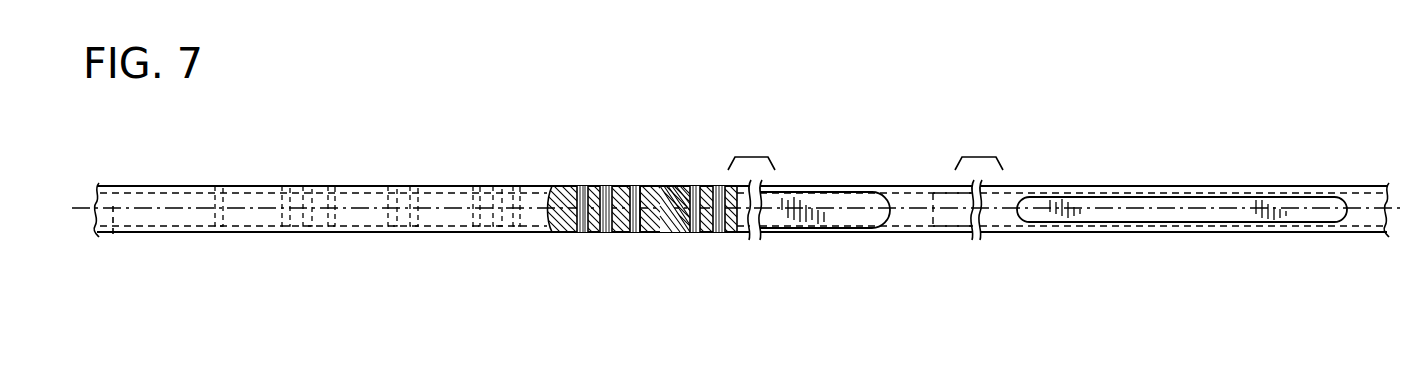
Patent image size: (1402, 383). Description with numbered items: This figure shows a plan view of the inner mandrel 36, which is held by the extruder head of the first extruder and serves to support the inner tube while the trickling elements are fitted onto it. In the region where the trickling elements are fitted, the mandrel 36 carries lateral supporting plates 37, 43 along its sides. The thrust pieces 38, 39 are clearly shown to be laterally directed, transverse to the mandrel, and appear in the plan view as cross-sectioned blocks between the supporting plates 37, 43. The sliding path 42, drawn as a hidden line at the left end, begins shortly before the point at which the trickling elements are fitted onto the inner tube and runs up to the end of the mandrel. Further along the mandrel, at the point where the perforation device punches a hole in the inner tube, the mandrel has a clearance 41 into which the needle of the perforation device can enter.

The inner mandrel 36 is at (847, 197).
The supporting plate 37 is at (170, 233).
The thrust piece 38 is at (580, 187).
The thrust piece 39 is at (607, 187).
The clearance 41 is at (1123, 197).
The sliding path 42 is at (113, 235).
The supporting plate 43 is at (130, 186).